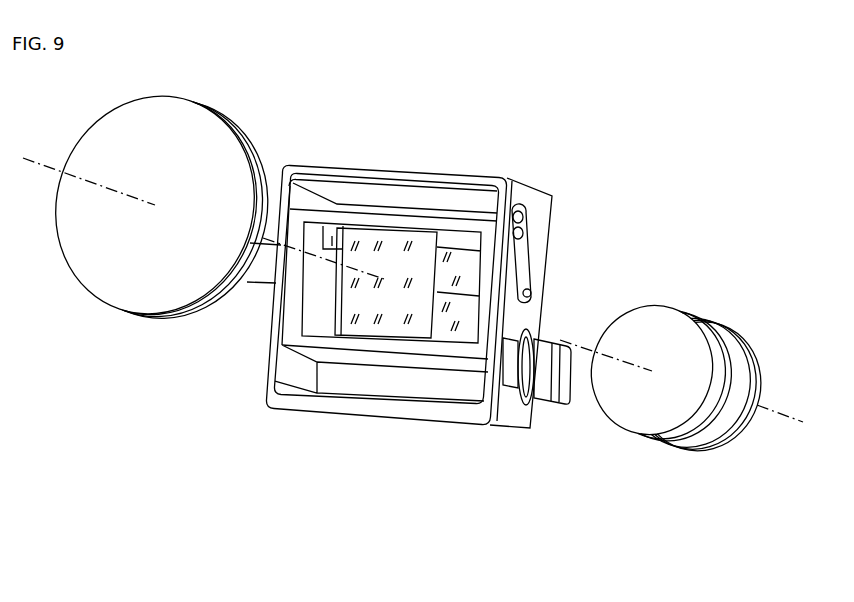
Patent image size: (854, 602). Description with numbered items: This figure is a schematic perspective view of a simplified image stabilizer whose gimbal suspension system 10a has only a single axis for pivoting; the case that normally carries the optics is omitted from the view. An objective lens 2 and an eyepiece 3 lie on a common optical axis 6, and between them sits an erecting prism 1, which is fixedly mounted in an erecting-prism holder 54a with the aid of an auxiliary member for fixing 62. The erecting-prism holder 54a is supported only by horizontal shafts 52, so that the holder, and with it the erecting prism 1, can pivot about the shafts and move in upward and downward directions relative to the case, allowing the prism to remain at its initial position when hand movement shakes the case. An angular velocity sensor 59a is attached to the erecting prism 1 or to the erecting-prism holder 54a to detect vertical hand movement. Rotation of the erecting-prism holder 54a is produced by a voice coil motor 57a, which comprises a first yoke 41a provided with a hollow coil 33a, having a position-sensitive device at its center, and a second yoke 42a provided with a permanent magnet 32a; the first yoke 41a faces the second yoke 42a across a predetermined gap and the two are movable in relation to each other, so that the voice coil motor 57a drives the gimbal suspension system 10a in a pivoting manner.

The erecting prism 1 is at (384, 278).
The objective lens 2 is at (120, 273).
The eyepiece 3 is at (717, 340).
The optical axis 6 is at (790, 421).
The gimbal suspension system 10a is at (325, 159).
The permanent magnet 32a is at (549, 403).
The hollow coil 33a is at (520, 388).
The first yoke 41a is at (509, 375).
The second yoke 42a is at (572, 402).
The horizontal shafts 52 is at (612, 302).
The erecting-prism holder 54a is at (264, 381).
The voice coil motor 57a is at (543, 416).
The angular velocity sensor 59a is at (331, 251).
The auxiliary member for fixing 62 is at (420, 362).